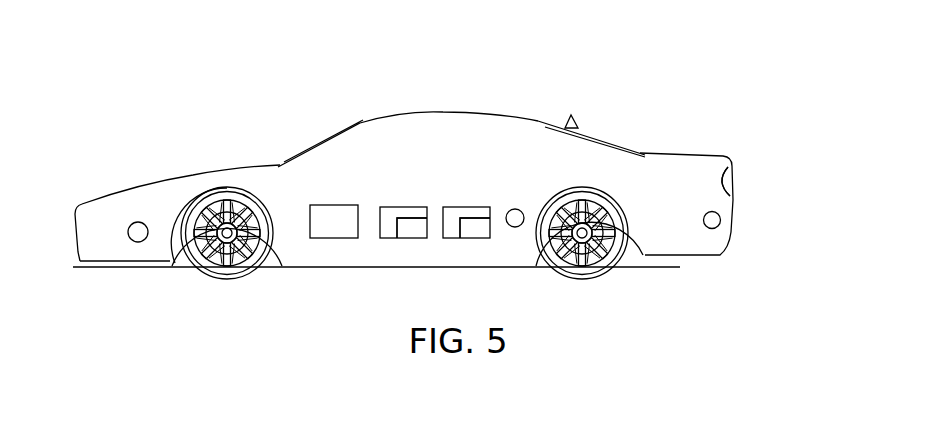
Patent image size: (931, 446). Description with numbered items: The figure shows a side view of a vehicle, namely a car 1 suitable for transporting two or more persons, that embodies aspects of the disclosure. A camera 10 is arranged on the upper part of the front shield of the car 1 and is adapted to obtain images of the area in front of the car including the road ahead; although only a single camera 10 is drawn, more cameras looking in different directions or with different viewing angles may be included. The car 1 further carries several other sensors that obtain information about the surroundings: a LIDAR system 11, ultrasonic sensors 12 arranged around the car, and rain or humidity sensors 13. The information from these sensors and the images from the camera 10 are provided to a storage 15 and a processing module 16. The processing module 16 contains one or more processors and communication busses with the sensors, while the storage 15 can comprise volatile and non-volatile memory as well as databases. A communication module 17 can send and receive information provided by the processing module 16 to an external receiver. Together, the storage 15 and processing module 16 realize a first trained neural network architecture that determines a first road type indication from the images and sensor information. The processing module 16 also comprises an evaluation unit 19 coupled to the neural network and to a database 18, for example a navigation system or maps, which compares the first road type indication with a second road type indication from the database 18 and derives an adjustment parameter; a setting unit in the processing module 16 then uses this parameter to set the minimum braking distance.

The car 1 is at (406, 127).
The camera 10 is at (569, 106).
The LIDAR system 11 is at (733, 182).
The ultrasonic sensors 12 is at (138, 216).
The rain or humidity sensors 13 is at (515, 231).
The storage 15 is at (463, 207).
The processing module 16 is at (400, 207).
The communication module 17 is at (333, 205).
The database 18 is at (477, 230).
The evaluation unit 19 is at (412, 230).